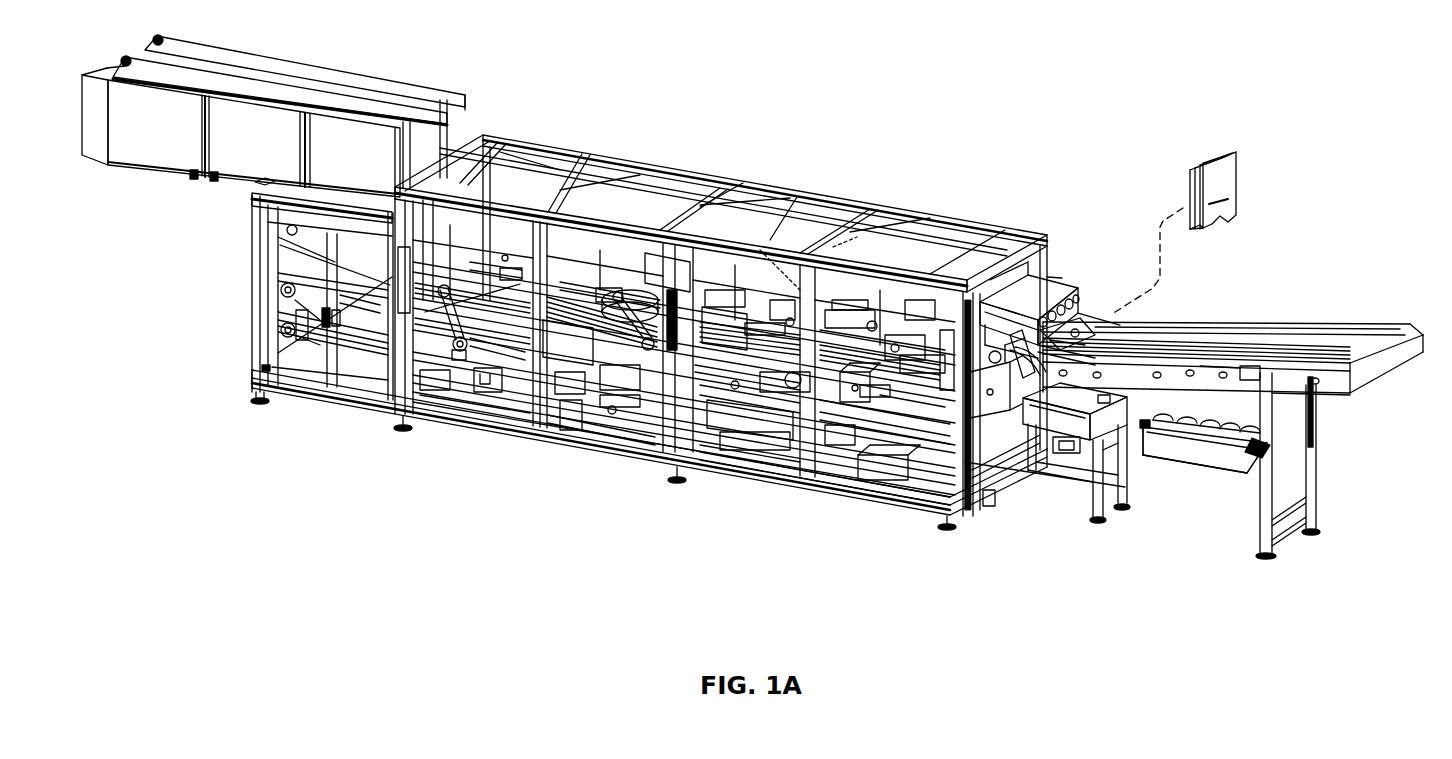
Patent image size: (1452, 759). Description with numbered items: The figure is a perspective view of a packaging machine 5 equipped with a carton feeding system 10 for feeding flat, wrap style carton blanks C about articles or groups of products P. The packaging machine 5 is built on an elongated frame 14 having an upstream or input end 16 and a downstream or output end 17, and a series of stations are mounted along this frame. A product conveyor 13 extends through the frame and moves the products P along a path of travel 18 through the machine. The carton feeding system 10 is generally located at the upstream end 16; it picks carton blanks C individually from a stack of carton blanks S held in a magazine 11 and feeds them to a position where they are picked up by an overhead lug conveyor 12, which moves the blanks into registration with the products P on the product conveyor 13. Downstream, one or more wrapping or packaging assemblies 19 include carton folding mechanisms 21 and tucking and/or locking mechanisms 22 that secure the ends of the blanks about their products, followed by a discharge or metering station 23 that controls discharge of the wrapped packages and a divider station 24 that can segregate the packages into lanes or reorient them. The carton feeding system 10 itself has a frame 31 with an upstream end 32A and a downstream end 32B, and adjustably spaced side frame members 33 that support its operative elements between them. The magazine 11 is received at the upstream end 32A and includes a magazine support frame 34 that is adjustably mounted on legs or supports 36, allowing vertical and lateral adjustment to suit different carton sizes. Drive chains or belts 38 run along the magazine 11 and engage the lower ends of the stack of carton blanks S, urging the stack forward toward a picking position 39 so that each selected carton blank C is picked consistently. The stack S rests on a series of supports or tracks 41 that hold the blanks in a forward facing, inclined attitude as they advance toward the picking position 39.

The packaging machine 5 is at (1036, 146).
The carton feeding system 10 is at (1061, 272).
The magazine 11 is at (1169, 313).
The overhead lug conveyor 12 is at (851, 308).
The product conveyor 13 is at (878, 390).
The elongated frame 14 is at (776, 483).
The upstream end 16 is at (1047, 414).
The downstream end 17 is at (258, 288).
The path of travel 18 is at (1220, 482).
The wrapping or packaging assembly 19 is at (754, 318).
The carton folding mechanism 21 is at (722, 365).
The tucking and/or locking mechanism 22 is at (615, 440).
The discharge or metering station 23 is at (610, 282).
The divider station 24 is at (516, 262).
The frame 31 is at (980, 505).
The upstream end 32A is at (1080, 322).
The downstream end 32B is at (920, 335).
The side frame members 33 is at (1018, 292).
The magazine support frame 34 is at (1187, 397).
The legs or supports 36 is at (1279, 398).
The drive chains or belts 38 is at (1218, 372).
The picking position 39 is at (1080, 318).
The supports or tracks 41 is at (1304, 330).
The carton blank C is at (864, 370).
The products P is at (1231, 421).
The stack of carton blanks S is at (1246, 176).